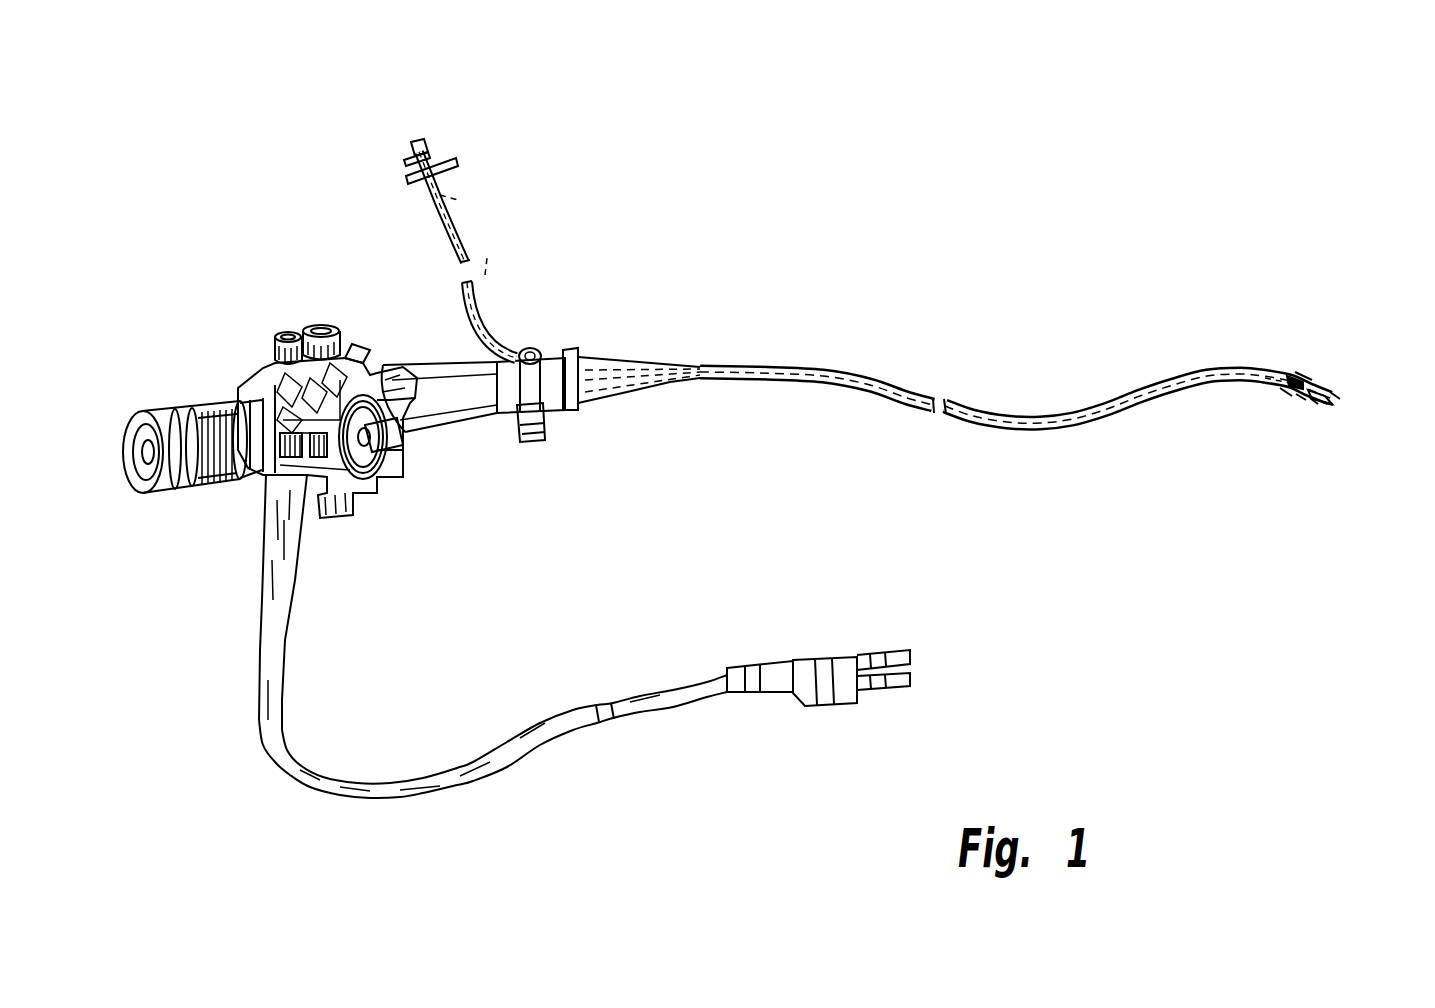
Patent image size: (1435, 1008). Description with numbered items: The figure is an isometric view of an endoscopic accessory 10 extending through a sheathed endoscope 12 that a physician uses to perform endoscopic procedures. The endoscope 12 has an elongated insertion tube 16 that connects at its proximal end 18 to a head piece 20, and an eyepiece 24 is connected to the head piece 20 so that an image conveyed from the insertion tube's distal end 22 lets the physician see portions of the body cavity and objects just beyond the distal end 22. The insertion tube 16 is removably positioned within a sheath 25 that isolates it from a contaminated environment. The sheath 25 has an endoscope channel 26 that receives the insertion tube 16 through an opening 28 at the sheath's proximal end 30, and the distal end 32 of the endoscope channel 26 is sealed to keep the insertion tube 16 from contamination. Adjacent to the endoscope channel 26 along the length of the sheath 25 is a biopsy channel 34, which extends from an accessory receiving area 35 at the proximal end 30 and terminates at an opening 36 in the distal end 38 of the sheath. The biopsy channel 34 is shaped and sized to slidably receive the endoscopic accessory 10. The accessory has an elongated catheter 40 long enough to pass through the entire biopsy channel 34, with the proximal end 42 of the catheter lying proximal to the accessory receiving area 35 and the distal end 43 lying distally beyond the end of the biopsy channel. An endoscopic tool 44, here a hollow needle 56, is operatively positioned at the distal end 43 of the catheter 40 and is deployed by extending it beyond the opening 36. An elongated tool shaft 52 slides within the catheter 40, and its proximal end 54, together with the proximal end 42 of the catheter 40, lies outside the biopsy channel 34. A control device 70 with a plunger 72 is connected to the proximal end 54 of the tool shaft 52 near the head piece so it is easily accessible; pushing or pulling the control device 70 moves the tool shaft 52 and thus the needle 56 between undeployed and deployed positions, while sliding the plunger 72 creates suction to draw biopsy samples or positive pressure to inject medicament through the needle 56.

The endoscopic accessory 10 is at (477, 303).
The sheathed endoscope 12 is at (247, 373).
The insertion tube 16 is at (822, 368).
The proximal end 18 is at (568, 350).
The head piece 20 is at (370, 352).
The distal end 22 is at (1305, 375).
The eyepiece 24 is at (162, 402).
The sheath 25 is at (612, 352).
The endoscope channel 26 is at (883, 376).
The opening 28 is at (556, 415).
The proximal end 30 is at (531, 347).
The distal end 32 is at (1285, 372).
The biopsy channel 34 is at (665, 360).
The accessory receiving area 35 is at (500, 412).
The opening 36 is at (1300, 402).
The distal end 38 is at (1285, 396).
The catheter 40 is at (470, 326).
The proximal end 42 is at (455, 168).
The distal end 43 is at (1315, 404).
The endoscopic tool 44 is at (1342, 396).
The tool shaft 52 is at (487, 272).
The proximal end 54 is at (462, 196).
The hollow needle 56 is at (1331, 403).
The control device 70 is at (438, 142).
The plunger 72 is at (413, 142).